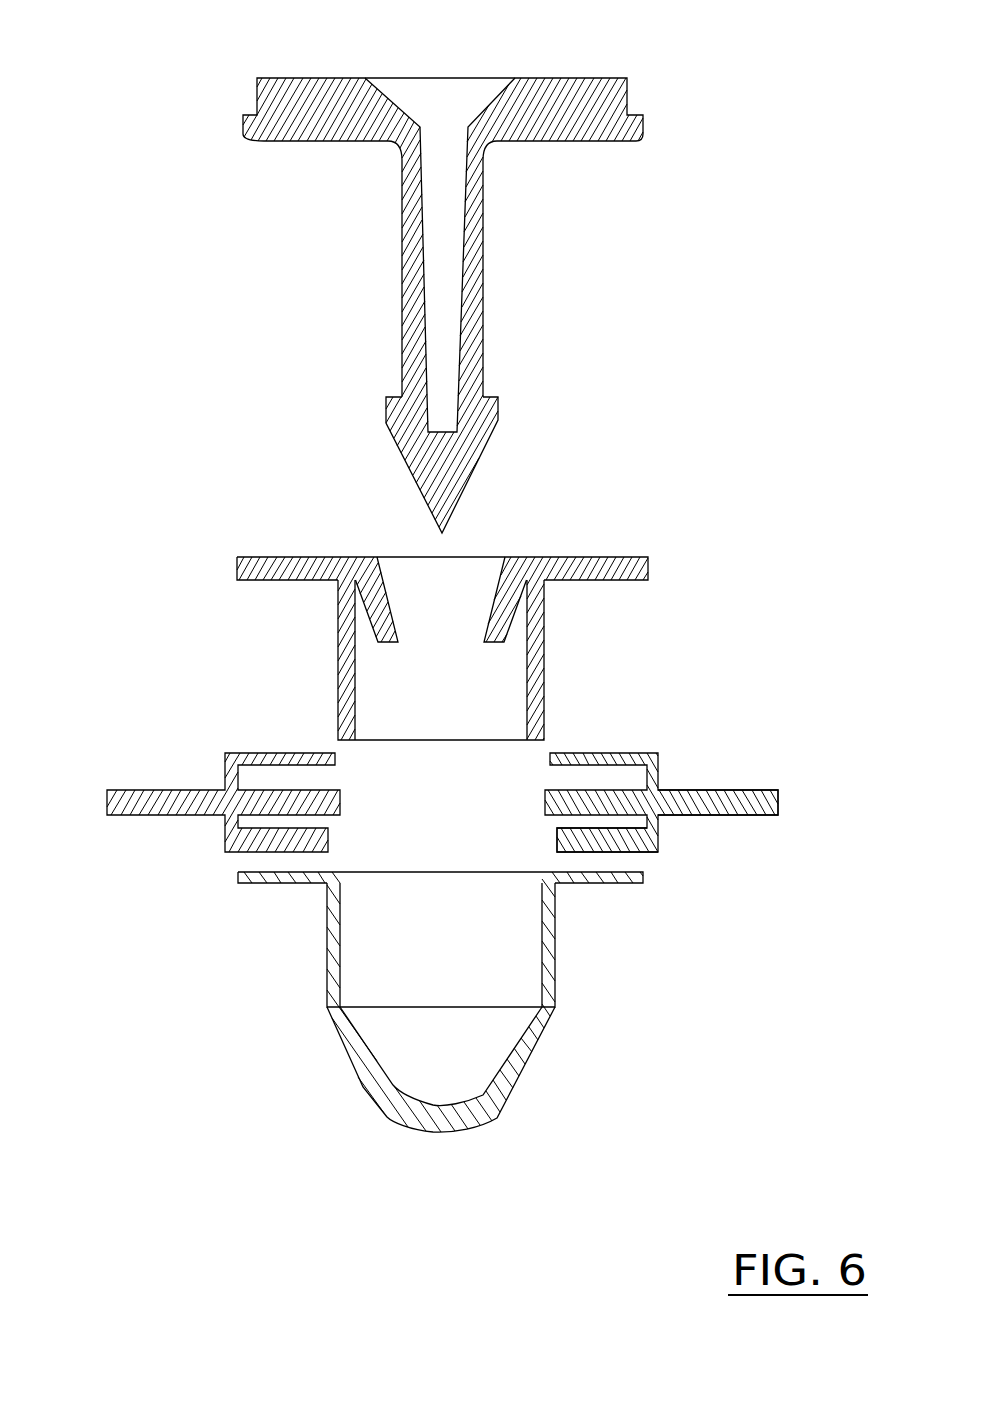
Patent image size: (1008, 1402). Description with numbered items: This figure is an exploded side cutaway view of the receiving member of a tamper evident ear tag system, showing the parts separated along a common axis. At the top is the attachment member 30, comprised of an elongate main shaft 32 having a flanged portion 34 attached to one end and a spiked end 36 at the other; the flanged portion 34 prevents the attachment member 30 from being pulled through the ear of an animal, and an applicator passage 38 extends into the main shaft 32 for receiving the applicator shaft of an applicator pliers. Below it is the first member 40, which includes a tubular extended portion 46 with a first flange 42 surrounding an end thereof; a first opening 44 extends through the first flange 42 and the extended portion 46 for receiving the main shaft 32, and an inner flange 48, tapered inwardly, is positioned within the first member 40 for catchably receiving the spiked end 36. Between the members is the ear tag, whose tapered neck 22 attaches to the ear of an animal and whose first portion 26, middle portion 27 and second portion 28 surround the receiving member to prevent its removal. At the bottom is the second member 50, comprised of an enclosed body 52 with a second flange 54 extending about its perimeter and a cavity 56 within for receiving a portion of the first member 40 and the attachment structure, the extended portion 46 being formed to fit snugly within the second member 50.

The tapered neck 22 is at (162, 790).
The first portion 26 is at (715, 793).
The middle portion 27 is at (640, 800).
The second portion 28 is at (625, 853).
The attachment member 30 is at (520, 266).
The main shaft 32 is at (483, 310).
The flanged portion 34 is at (628, 90).
The spiked end 36 is at (462, 497).
The applicator passage 38 is at (442, 107).
The first member 40 is at (461, 581).
The first flange 42 is at (650, 567).
The first opening 44 is at (393, 567).
The extended portion 46 is at (543, 703).
The inner flange 48 is at (495, 590).
The second member 50 is at (482, 1010).
The body 52 is at (505, 1105).
The second flange 54 is at (605, 883).
The cavity 56 is at (405, 1050).